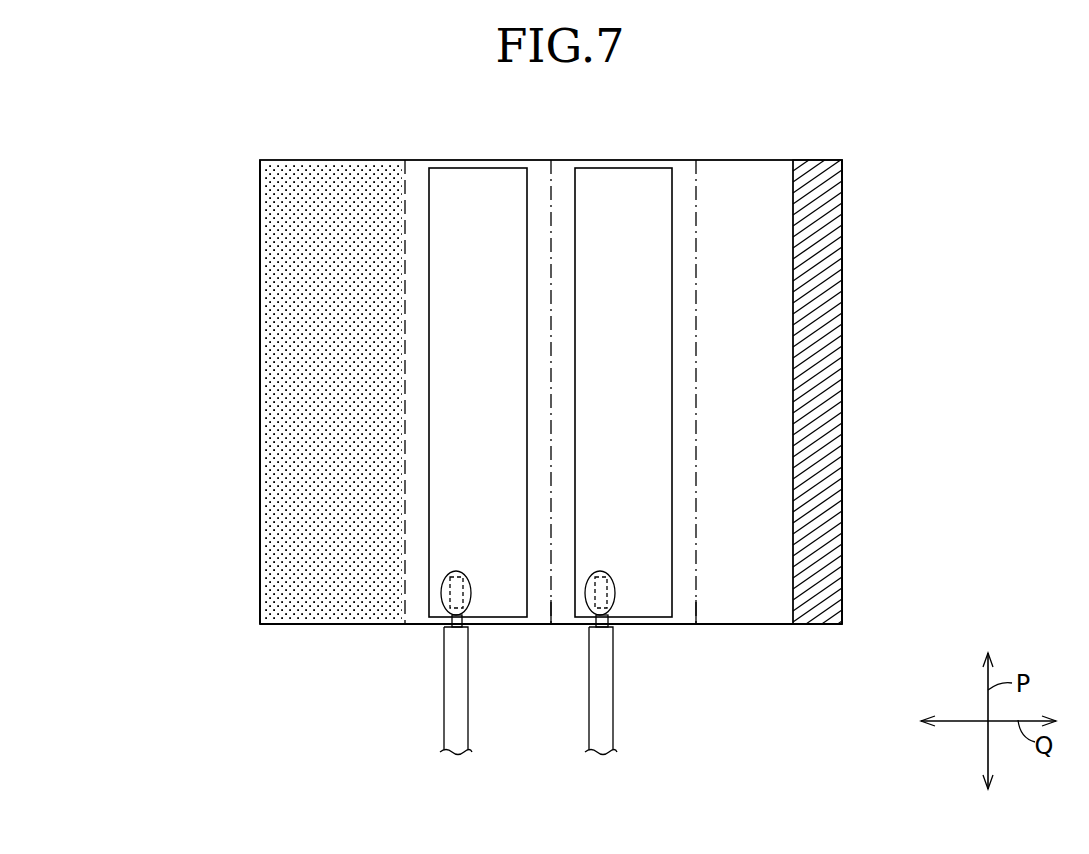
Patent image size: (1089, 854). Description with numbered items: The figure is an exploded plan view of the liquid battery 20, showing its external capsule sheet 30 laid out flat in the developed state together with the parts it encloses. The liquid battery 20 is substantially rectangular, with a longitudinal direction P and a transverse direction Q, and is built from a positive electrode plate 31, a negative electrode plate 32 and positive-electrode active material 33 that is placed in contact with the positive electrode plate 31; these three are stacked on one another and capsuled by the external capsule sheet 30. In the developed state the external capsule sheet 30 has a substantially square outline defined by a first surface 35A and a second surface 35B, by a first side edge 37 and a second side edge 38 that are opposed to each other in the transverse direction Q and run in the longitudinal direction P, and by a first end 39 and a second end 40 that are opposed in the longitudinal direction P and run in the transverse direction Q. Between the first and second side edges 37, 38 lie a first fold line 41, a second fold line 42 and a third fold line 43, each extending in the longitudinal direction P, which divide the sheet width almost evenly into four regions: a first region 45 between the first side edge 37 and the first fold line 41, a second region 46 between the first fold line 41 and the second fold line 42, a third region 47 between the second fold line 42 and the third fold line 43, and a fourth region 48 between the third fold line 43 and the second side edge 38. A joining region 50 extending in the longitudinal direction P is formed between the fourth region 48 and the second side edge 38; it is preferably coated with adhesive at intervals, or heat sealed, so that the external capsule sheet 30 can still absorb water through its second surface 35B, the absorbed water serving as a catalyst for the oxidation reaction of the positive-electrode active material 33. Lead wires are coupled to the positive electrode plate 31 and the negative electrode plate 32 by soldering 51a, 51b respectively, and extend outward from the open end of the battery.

The liquid battery 20 is at (906, 148).
The external capsule sheet 30 is at (781, 221).
The positive electrode plate 31 is at (473, 182).
The negative electrode plate 32 is at (617, 183).
The positive-electrode active material 33 is at (345, 172).
The first surface 35A is at (765, 180).
The second surface 35B is at (713, 178).
The first side edge 37 is at (260, 355).
The second side edge 38 is at (842, 320).
The first end 39 is at (536, 158).
The second end 40 is at (729, 625).
The first fold line 41 is at (405, 618).
The second fold line 42 is at (541, 618).
The third fold line 43 is at (695, 618).
The first region 45 is at (302, 608).
The second region 46 is at (484, 618).
The third region 47 is at (633, 621).
The fourth region 48 is at (756, 600).
The joining region 50 is at (822, 419).
The soldering 51a is at (467, 583).
The soldering 51b is at (611, 583).